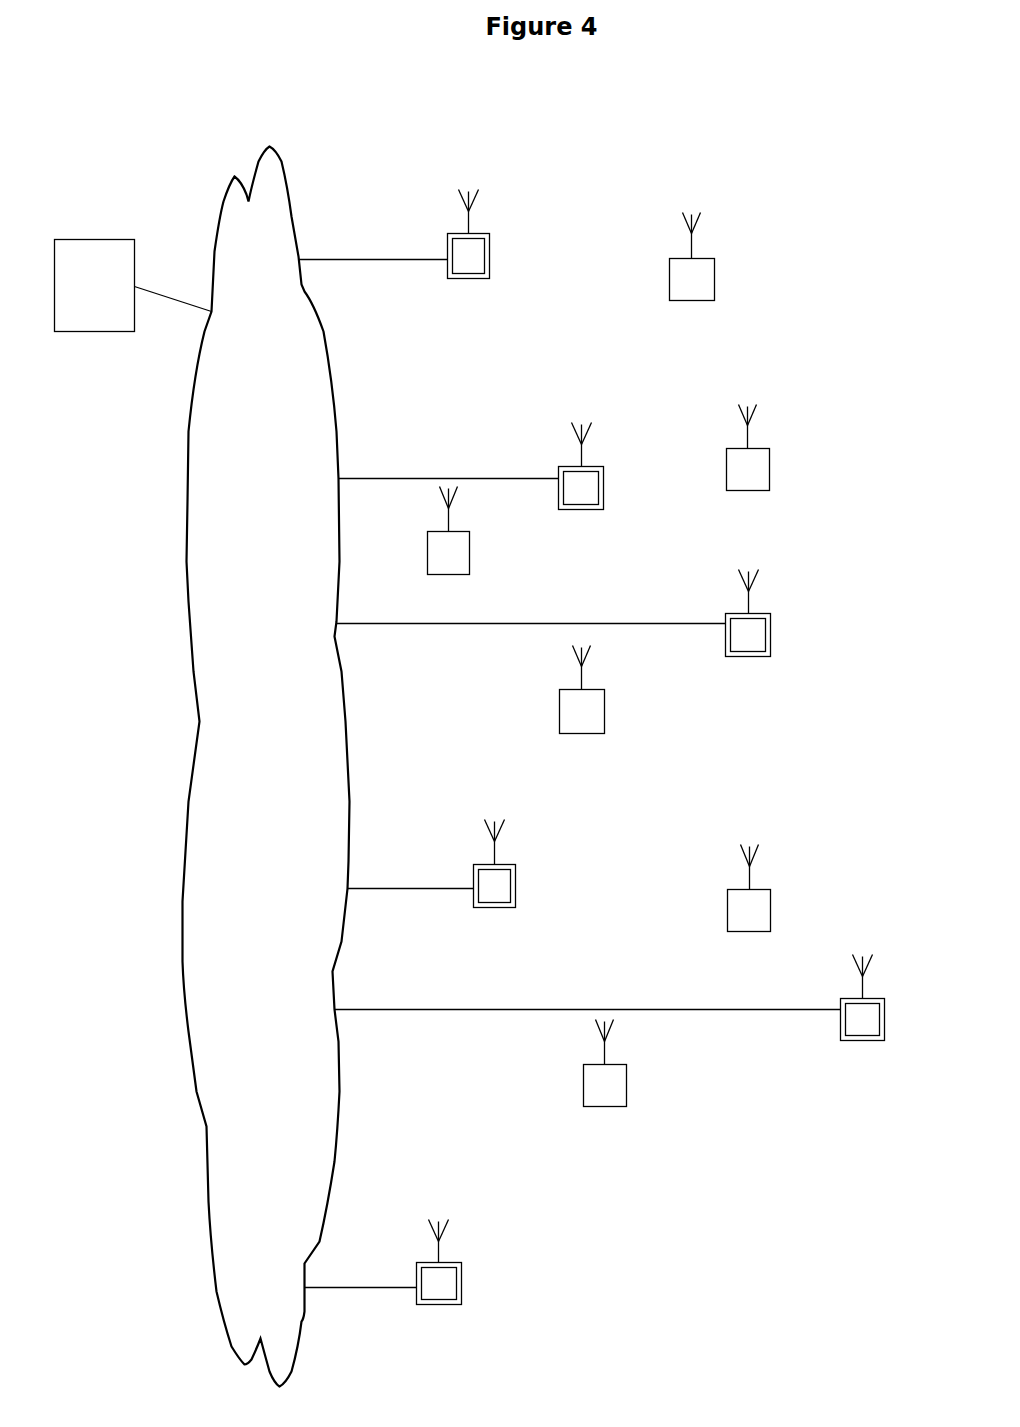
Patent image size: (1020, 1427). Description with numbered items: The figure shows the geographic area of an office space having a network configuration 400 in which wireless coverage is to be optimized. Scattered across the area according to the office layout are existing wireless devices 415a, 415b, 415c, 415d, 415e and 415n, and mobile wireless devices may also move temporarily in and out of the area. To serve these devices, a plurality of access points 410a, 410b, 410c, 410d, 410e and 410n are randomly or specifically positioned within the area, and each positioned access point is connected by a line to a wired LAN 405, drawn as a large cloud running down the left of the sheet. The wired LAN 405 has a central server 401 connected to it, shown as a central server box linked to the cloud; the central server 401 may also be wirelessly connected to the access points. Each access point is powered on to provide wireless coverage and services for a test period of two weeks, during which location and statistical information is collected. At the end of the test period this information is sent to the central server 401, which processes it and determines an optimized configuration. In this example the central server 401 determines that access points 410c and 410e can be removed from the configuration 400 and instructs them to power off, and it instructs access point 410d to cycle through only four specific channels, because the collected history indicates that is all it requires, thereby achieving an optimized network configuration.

The network configuration 400 is at (78, 118).
The central server 401 is at (133, 286).
The wired LAN 405 is at (266, 767).
The access point 410a is at (396, 247).
The access point 410b is at (472, 479).
The access point 410c is at (554, 627).
The access point 410d is at (433, 877).
The access point 410e is at (384, 1277).
The access point 410n is at (612, 1013).
The wireless device 415a is at (692, 270).
The wireless device 415b is at (747, 461).
The wireless device 415c is at (448, 545).
The wireless device 415d is at (581, 703).
The wireless device 415e is at (749, 904).
The wireless device 415n is at (604, 1076).